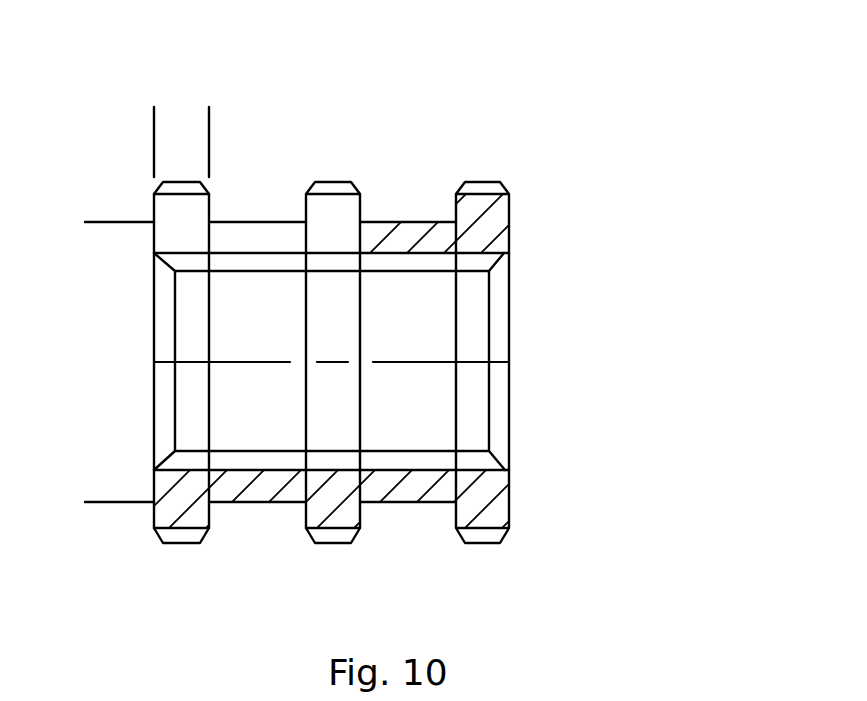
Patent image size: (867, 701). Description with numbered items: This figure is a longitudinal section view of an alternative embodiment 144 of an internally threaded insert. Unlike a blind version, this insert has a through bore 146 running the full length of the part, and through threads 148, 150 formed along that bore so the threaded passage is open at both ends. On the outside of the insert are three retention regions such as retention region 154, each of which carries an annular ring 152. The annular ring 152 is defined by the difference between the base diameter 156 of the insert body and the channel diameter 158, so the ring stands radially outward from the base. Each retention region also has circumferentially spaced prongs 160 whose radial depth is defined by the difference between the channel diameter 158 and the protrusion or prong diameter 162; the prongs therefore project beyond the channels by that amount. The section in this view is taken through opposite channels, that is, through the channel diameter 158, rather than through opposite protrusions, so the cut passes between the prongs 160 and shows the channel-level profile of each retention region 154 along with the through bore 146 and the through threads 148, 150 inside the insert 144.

The alternative embodiment of internally threaded insert 144 is at (417, 61).
The through bore 146 is at (417, 255).
The through threads 148 is at (425, 450).
The through threads 150 is at (233, 447).
The annular ring 152 is at (365, 522).
The retention region 154 is at (320, 545).
The base diameter 156 is at (107, 505).
The channel diameter 158 is at (509, 196).
The circumferentially spaced prongs 160 is at (506, 544).
The protrusion or prong diameter 162 is at (515, 182).